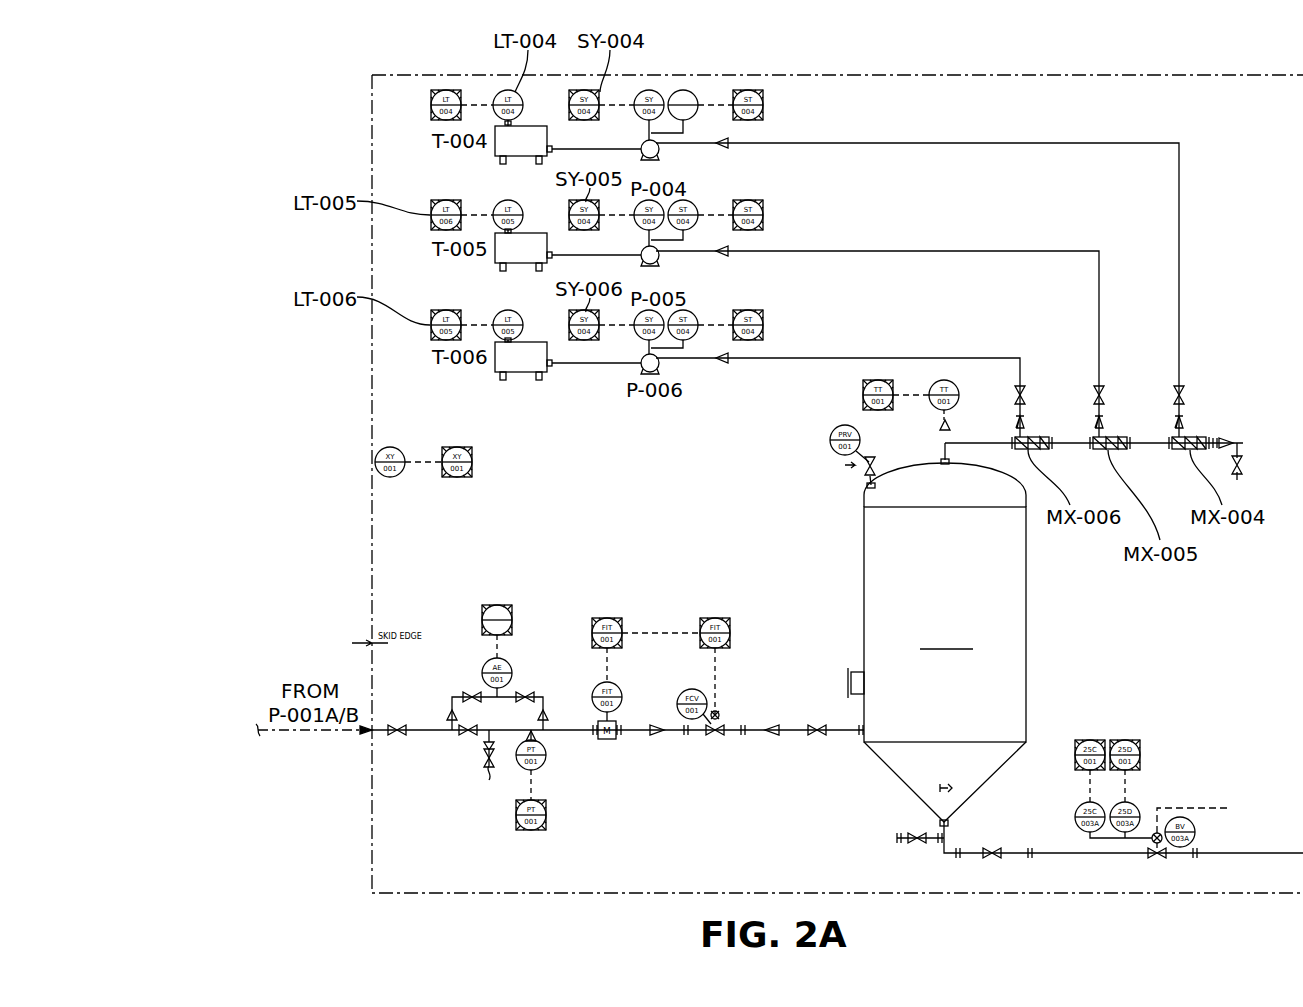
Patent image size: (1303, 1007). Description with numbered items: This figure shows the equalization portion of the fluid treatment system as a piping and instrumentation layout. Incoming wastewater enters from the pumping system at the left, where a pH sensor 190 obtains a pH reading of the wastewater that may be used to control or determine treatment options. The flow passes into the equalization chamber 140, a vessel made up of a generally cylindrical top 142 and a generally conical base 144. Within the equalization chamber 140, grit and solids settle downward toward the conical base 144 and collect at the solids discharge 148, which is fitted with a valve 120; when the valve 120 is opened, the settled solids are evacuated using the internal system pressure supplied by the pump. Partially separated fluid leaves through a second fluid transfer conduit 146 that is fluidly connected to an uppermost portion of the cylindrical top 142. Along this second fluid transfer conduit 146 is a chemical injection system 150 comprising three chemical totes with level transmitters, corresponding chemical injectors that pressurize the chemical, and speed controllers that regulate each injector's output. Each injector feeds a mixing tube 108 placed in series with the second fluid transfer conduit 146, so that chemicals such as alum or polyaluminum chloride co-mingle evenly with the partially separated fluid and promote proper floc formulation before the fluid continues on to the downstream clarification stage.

The mixing tube 108 is at (1195, 435).
The valve 120 is at (1150, 856).
The equalization chamber 140 is at (864, 594).
The cylindrical top 142 is at (878, 541).
The conical base 144 is at (900, 768).
The second fluid transfer conduit 146 is at (980, 440).
The solids discharge 148 is at (940, 823).
The chemical injection system 150 is at (700, 90).
The pH sensor 190 is at (490, 606).